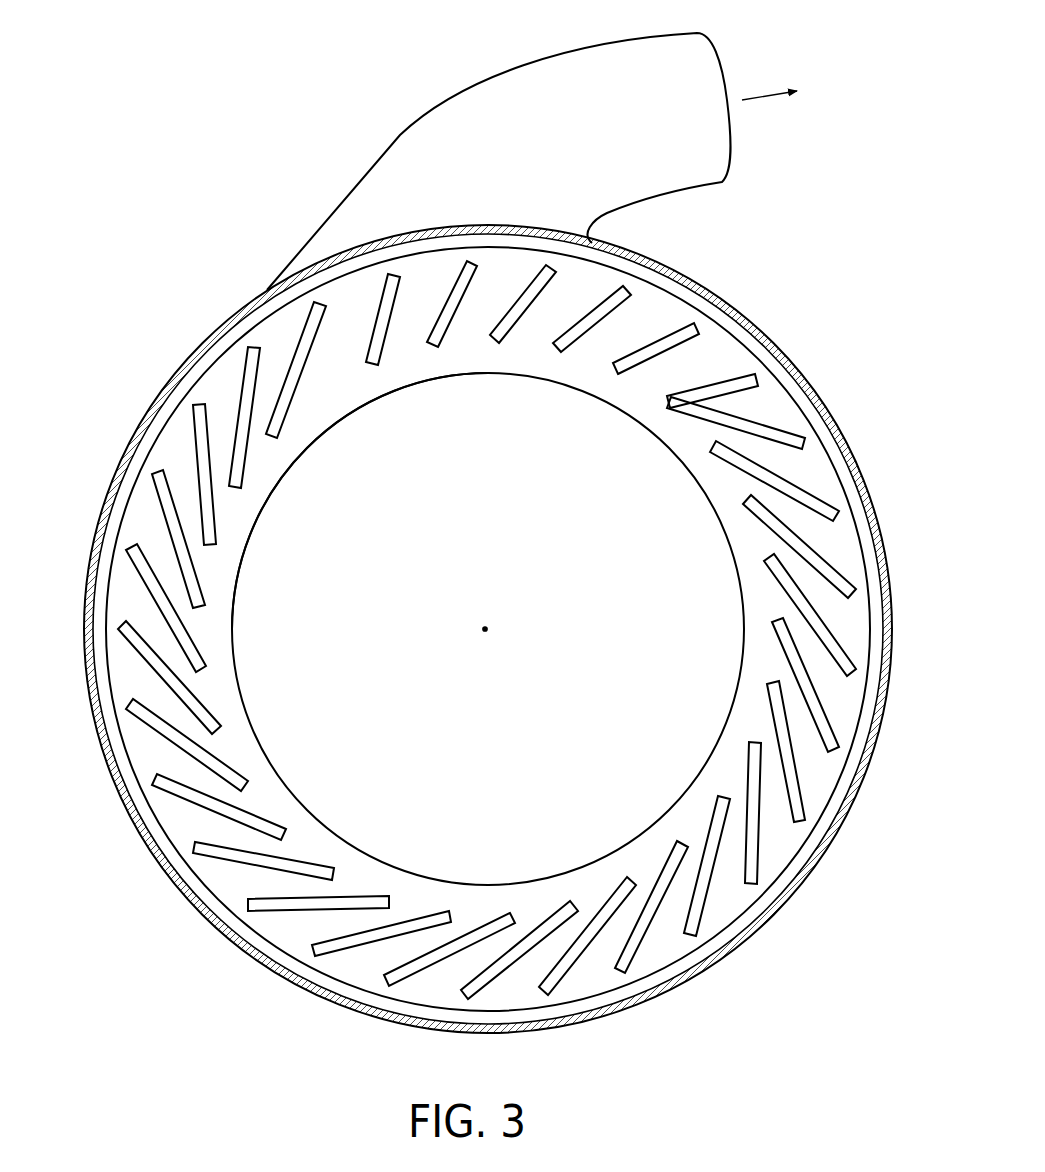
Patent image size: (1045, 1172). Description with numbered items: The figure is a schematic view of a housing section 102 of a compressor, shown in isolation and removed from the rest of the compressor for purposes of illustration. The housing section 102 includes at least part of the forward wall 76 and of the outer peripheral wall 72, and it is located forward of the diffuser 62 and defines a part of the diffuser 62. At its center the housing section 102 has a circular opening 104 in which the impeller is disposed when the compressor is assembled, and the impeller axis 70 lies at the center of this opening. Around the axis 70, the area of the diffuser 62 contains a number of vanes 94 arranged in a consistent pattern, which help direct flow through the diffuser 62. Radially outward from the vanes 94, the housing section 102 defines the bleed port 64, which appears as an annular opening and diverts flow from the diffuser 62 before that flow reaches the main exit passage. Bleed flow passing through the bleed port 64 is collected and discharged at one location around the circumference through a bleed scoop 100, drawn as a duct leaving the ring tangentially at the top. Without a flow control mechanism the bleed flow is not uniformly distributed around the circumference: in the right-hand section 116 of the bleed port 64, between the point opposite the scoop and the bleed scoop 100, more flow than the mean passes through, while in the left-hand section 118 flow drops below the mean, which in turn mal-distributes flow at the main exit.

The diffuser 62 is at (529, 630).
The bleed port 64 is at (743, 338).
The axis 70 is at (485, 633).
The outer peripheral wall 72 is at (217, 328).
The forward wall 76 is at (533, 372).
The vanes 94 is at (852, 670).
The bleed scoop 100 is at (395, 141).
The housing section 102 is at (824, 150).
The circular opening 104 is at (243, 560).
The section 116 is at (857, 490).
The section 118 is at (110, 730).